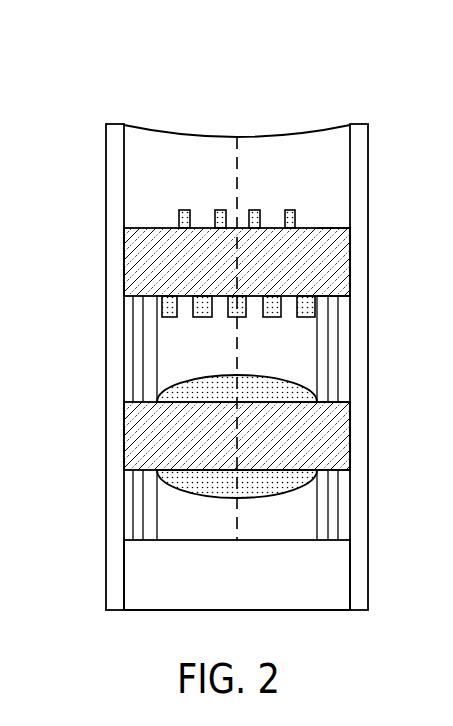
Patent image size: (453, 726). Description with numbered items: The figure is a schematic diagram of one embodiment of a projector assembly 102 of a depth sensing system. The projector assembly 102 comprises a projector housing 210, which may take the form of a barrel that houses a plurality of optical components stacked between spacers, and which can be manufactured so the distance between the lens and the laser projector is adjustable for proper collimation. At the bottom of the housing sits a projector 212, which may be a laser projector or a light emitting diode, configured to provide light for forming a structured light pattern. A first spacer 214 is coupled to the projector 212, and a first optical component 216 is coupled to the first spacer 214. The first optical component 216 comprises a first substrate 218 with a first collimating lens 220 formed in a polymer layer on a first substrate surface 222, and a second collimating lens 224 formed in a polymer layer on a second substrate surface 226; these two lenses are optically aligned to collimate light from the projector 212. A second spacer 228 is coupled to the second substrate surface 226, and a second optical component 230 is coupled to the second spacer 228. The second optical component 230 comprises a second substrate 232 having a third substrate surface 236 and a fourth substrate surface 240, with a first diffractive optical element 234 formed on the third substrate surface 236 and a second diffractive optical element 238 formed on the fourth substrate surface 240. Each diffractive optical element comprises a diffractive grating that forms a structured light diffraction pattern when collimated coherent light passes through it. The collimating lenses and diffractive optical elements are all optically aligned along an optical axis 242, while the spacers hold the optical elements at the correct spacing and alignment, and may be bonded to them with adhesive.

The projector assembly 102 is at (115, 68).
The projector housing 210 is at (108, 143).
The projector 212 is at (254, 598).
The first spacer 214 is at (124, 503).
The first optical component 216 is at (380, 437).
The first substrate 218 is at (202, 445).
The first collimating lens 220 is at (160, 492).
The first substrate surface 222 is at (333, 470).
The second collimating lens 224 is at (160, 392).
The second substrate surface 226 is at (333, 401).
The second spacer 228 is at (124, 349).
The second optical component 230 is at (380, 255).
The second substrate 232 is at (202, 270).
The first diffractive optical element 234 is at (160, 308).
The third substrate surface 236 is at (333, 297).
The second diffractive optical element 238 is at (178, 221).
The fourth substrate surface 240 is at (333, 229).
The optical axis 242 is at (237, 138).